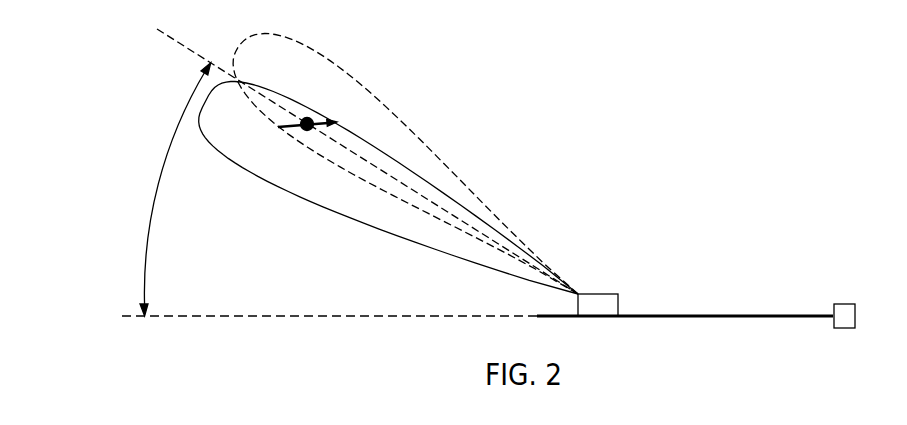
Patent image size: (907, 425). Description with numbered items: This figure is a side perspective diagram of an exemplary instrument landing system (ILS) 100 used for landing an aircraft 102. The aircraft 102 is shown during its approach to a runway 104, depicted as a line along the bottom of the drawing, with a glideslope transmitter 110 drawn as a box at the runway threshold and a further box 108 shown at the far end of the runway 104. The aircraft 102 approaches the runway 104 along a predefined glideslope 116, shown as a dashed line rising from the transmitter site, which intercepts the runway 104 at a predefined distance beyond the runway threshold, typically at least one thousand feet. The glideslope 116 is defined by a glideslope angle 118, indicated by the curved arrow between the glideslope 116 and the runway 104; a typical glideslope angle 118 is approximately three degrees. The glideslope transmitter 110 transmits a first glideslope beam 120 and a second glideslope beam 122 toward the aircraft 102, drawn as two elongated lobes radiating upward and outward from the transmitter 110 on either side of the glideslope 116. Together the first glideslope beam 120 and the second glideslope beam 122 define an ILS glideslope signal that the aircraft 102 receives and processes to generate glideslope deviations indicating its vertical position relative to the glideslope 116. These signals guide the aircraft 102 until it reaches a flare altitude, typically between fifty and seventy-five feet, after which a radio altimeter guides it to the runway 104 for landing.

The instrument landing system 100 is at (695, 250).
The aircraft 102 is at (300, 133).
The runway 104 is at (755, 315).
The second unit 108 is at (850, 305).
The glideslope transmitter 110 is at (608, 293).
The glideslope 116 is at (170, 36).
The glideslope angle 118 is at (155, 187).
The first glideslope beam 120 is at (393, 115).
The second glideslope beam 122 is at (277, 187).